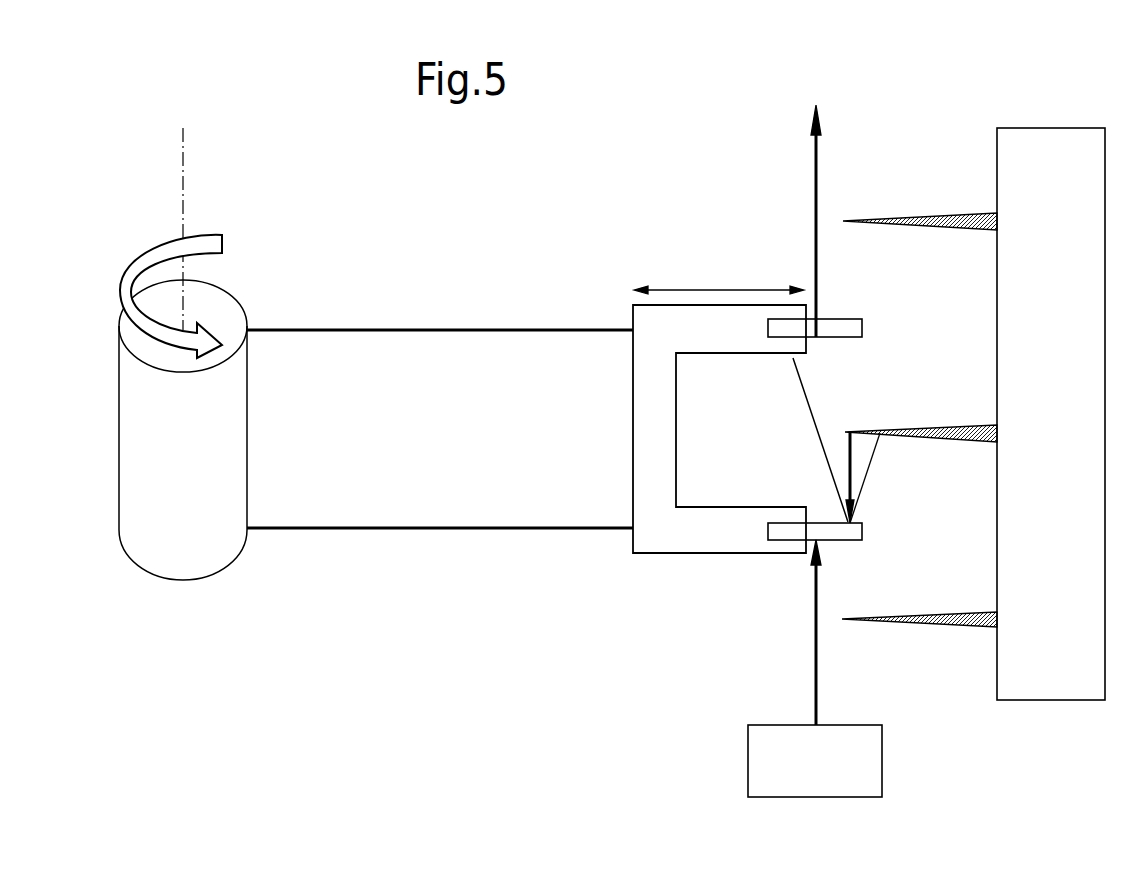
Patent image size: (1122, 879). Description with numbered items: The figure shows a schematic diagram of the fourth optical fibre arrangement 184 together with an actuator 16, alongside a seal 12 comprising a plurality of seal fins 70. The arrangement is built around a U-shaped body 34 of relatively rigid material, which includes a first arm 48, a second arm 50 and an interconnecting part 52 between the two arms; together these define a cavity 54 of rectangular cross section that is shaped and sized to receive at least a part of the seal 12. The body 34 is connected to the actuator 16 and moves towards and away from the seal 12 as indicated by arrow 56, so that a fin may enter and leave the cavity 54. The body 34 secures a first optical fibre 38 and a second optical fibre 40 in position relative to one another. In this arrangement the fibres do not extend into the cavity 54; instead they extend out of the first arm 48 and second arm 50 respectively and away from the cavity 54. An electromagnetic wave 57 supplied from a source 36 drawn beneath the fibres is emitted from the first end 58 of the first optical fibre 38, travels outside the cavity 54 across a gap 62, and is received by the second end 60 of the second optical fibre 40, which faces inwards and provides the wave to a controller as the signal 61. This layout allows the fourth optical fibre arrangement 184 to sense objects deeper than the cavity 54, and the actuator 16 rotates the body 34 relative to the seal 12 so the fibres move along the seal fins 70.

The seal 12 is at (1055, 100).
The actuator 16 is at (207, 560).
The body 34 is at (677, 545).
The source 36 is at (752, 783).
The first optical fibre 38 is at (833, 535).
The second optical fibre 40 is at (830, 322).
The first arm 48 is at (740, 541).
The second arm 50 is at (728, 343).
The interconnecting part 52 is at (668, 428).
The cavity 54 is at (740, 428).
The arrow 56 is at (705, 288).
The electromagnetic wave 57 is at (852, 474).
The first end 58 is at (822, 520).
The second end 60 is at (837, 338).
The signal 61 is at (820, 150).
The gap 62 is at (858, 413).
The seal fins 70 is at (935, 212).
The fourth optical fibre arrangement 184 is at (625, 643).